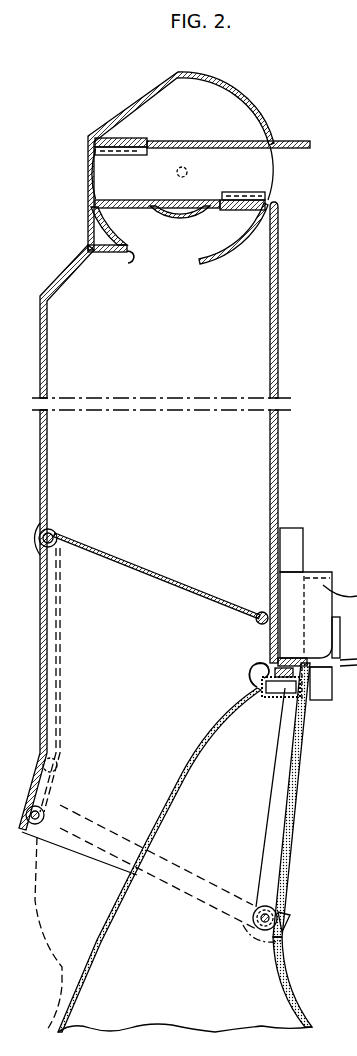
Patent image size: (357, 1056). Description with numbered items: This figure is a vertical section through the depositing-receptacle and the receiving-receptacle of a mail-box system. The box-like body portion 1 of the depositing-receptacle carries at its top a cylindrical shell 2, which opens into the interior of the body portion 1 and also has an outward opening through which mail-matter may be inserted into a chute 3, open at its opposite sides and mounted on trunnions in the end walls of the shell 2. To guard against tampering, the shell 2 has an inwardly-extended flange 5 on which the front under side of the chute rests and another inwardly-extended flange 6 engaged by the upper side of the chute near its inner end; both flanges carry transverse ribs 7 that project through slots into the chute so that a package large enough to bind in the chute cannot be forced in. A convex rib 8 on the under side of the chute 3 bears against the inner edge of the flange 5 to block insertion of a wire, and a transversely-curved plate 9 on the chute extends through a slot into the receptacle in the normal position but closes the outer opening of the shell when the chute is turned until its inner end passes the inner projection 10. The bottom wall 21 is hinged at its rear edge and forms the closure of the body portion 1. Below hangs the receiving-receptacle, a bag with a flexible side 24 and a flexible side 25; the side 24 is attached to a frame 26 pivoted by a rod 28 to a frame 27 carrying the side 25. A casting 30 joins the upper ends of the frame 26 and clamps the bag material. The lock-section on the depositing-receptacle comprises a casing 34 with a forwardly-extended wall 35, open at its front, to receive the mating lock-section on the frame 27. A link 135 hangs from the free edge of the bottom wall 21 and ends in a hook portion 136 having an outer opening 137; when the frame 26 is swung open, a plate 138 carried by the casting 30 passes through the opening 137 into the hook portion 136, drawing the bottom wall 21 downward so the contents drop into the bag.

The box-like body portion 1 is at (279, 379).
The cylindrical shell 2 is at (243, 93).
The chute 3 is at (227, 141).
The inwardly-extended flange 5 is at (237, 209).
The inwardly-extended flange 6 is at (130, 139).
The transverse ribs 7 is at (122, 151).
The convex rib 8 is at (182, 214).
The transversely-curved plate 9 is at (228, 248).
The inner projection 10 is at (125, 264).
The bottom wall 21 is at (153, 576).
The flexible side 24 is at (152, 790).
The flexible side 25 is at (300, 973).
The frame 26 is at (268, 794).
The frame 27 is at (301, 801).
The rod 28 is at (278, 916).
The casting 30 is at (293, 688).
The casing 34 is at (306, 593).
The forwardly-extended wall 35 is at (322, 576).
The link 135 is at (268, 657).
The hook portion 136 is at (256, 673).
The outer opening 137 is at (270, 682).
The plate 138 is at (309, 728).